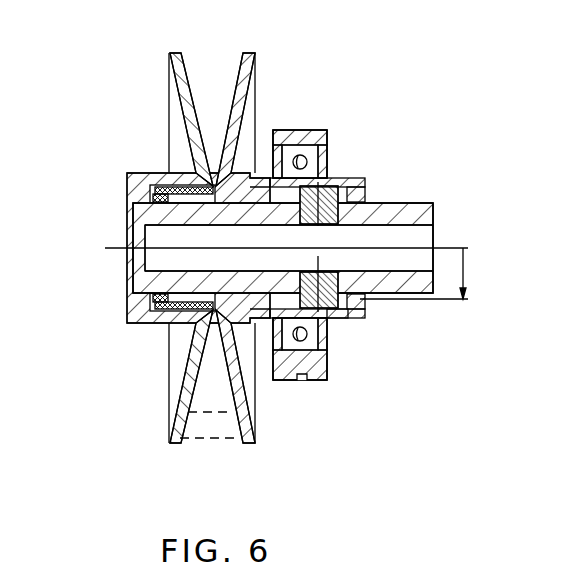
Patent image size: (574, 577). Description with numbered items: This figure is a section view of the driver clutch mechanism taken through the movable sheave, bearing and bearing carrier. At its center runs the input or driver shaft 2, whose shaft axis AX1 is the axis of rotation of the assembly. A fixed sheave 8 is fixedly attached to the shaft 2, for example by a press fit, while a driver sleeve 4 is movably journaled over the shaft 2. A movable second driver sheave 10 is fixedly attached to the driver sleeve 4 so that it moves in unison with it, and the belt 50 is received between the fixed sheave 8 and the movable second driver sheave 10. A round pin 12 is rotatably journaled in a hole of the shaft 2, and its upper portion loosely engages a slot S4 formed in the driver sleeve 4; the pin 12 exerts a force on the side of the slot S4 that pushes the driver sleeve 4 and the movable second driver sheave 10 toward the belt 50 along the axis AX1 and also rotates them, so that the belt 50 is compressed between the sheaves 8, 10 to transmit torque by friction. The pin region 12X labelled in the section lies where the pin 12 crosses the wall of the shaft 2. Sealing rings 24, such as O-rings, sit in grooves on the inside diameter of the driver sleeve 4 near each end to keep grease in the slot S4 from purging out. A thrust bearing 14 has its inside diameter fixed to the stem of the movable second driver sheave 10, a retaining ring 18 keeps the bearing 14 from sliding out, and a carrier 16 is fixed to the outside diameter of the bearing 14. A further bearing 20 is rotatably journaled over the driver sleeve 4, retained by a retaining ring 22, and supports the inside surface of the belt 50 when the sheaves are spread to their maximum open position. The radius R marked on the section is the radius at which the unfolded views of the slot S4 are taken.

The driver shaft 2 is at (436, 203).
The driver sleeve 4 is at (362, 182).
The fixed sheave 8 is at (181, 96).
The movable second driver sheave 10 is at (244, 58).
The pin 12 is at (312, 271).
The pin 12X is at (318, 226).
The thrust bearing 14 is at (328, 158).
The carrier 16 is at (312, 381).
The retaining ring 18 is at (327, 320).
The bearing 20 is at (157, 325).
The retaining ring 22 is at (158, 188).
The sealing rings 24 is at (158, 298).
The belt 50 is at (214, 441).
The slot S4 is at (252, 195).
The shaft axis AX1 is at (118, 249).
The radius R is at (420, 273).